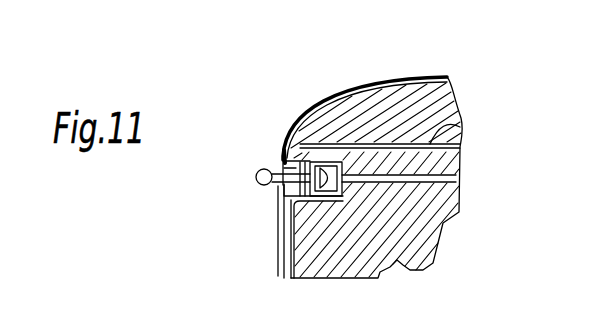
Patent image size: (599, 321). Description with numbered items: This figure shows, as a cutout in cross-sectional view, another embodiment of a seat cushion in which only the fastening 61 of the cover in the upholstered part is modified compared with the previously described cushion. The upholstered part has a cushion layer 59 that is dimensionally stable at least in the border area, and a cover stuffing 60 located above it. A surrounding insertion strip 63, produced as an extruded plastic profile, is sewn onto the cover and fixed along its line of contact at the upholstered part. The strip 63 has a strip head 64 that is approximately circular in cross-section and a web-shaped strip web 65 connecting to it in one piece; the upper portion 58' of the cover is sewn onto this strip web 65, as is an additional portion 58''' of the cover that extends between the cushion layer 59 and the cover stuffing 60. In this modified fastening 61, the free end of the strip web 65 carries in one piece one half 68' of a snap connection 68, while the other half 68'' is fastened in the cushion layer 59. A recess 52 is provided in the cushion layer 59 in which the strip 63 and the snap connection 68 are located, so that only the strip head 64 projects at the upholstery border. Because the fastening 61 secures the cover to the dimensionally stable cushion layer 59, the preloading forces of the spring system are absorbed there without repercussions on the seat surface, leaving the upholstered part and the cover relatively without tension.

The recess 52 is at (283, 198).
The upper portion of the cover 58' is at (376, 95).
The additional portion of the cover 58''' is at (481, 131).
The cushion layer 59 is at (402, 222).
The cover stuffing 60 is at (452, 103).
The fastening 61 is at (266, 201).
The insertion strip 63 is at (250, 161).
The strip head 64 is at (256, 177).
The strip web 65 is at (283, 161).
The snap connection 68 is at (316, 126).
The half of the snap connection 68' is at (281, 136).
The other half of the snap connection 68'' is at (342, 115).